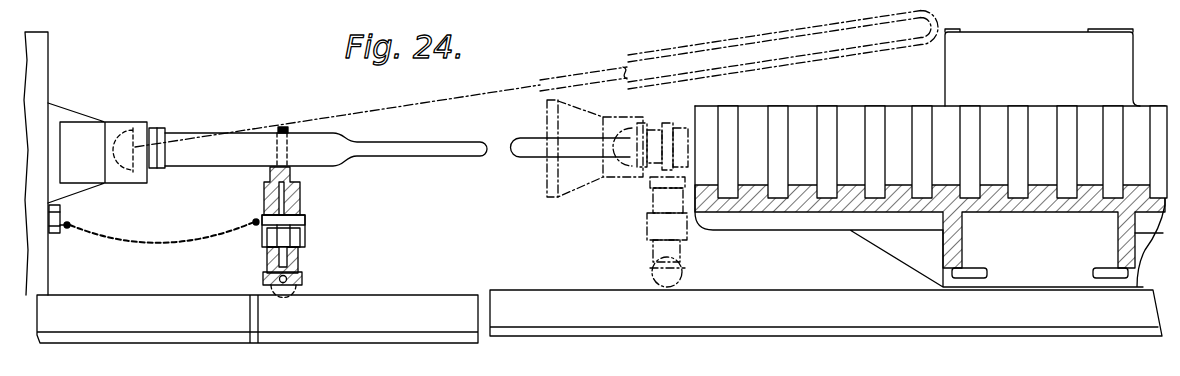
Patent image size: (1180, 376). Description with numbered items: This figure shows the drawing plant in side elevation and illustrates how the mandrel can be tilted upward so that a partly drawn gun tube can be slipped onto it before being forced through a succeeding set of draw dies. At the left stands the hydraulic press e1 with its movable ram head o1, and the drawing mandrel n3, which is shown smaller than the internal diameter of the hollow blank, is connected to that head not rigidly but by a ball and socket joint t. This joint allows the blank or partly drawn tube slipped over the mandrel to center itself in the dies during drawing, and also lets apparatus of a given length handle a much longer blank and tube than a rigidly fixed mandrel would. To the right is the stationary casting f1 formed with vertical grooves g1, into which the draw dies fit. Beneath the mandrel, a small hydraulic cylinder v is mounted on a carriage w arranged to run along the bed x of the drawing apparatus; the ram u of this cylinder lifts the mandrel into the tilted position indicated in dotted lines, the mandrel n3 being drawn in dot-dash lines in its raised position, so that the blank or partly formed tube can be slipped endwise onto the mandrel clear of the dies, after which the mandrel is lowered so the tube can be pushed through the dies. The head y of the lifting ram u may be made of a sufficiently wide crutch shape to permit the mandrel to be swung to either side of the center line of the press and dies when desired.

The hydraulic press e1 is at (37, 65).
The ram head o1 is at (97, 153).
The ball and socket joint t is at (124, 134).
The mandrel n3 is at (528, 140).
The rod a is at (853, 24).
The head of the lifting ram y is at (263, 194).
The ram u is at (304, 228).
The hydraulic cylinder v is at (300, 254).
The carriage w is at (266, 290).
The bed x is at (462, 292).
The stationary casting f1 is at (803, 200).
The vertical grooves g1 is at (728, 157).